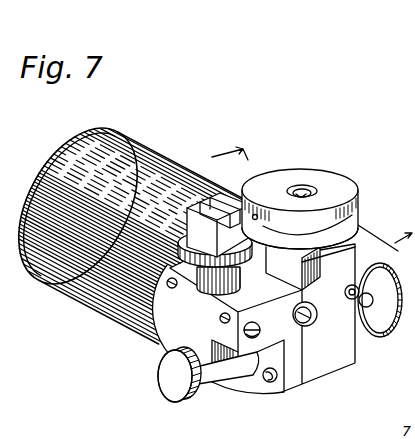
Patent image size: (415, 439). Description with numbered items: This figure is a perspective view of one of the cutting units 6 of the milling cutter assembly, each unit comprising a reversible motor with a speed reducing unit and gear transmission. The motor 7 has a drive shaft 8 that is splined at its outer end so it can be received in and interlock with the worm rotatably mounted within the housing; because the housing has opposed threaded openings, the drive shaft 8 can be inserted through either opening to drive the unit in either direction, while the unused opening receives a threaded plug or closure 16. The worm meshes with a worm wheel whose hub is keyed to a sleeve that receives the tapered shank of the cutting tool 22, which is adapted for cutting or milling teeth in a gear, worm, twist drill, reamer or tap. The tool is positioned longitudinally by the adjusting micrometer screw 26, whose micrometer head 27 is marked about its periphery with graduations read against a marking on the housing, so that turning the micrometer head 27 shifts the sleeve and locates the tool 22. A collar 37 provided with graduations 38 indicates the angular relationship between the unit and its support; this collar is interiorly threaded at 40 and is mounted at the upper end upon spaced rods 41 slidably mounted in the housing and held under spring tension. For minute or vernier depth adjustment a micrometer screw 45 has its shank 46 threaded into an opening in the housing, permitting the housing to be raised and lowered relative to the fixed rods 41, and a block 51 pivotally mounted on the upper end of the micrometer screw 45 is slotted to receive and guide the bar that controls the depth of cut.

The unit 6 is at (96, 329).
The motor 7 is at (116, 131).
The drive shaft 8 is at (304, 199).
The threaded plug or closure 16 is at (308, 325).
The cutting tool 22 is at (382, 333).
The adjusting micrometer screw 26 is at (152, 375).
The micrometer head 27 is at (176, 388).
The collar 37 is at (336, 180).
The graduations 38 is at (247, 190).
The interior threading of collar 40 is at (305, 188).
The spaced rods 41 is at (330, 273).
The micrometer screw 45 is at (246, 265).
The shank 46 is at (200, 289).
The block 51 is at (184, 222).